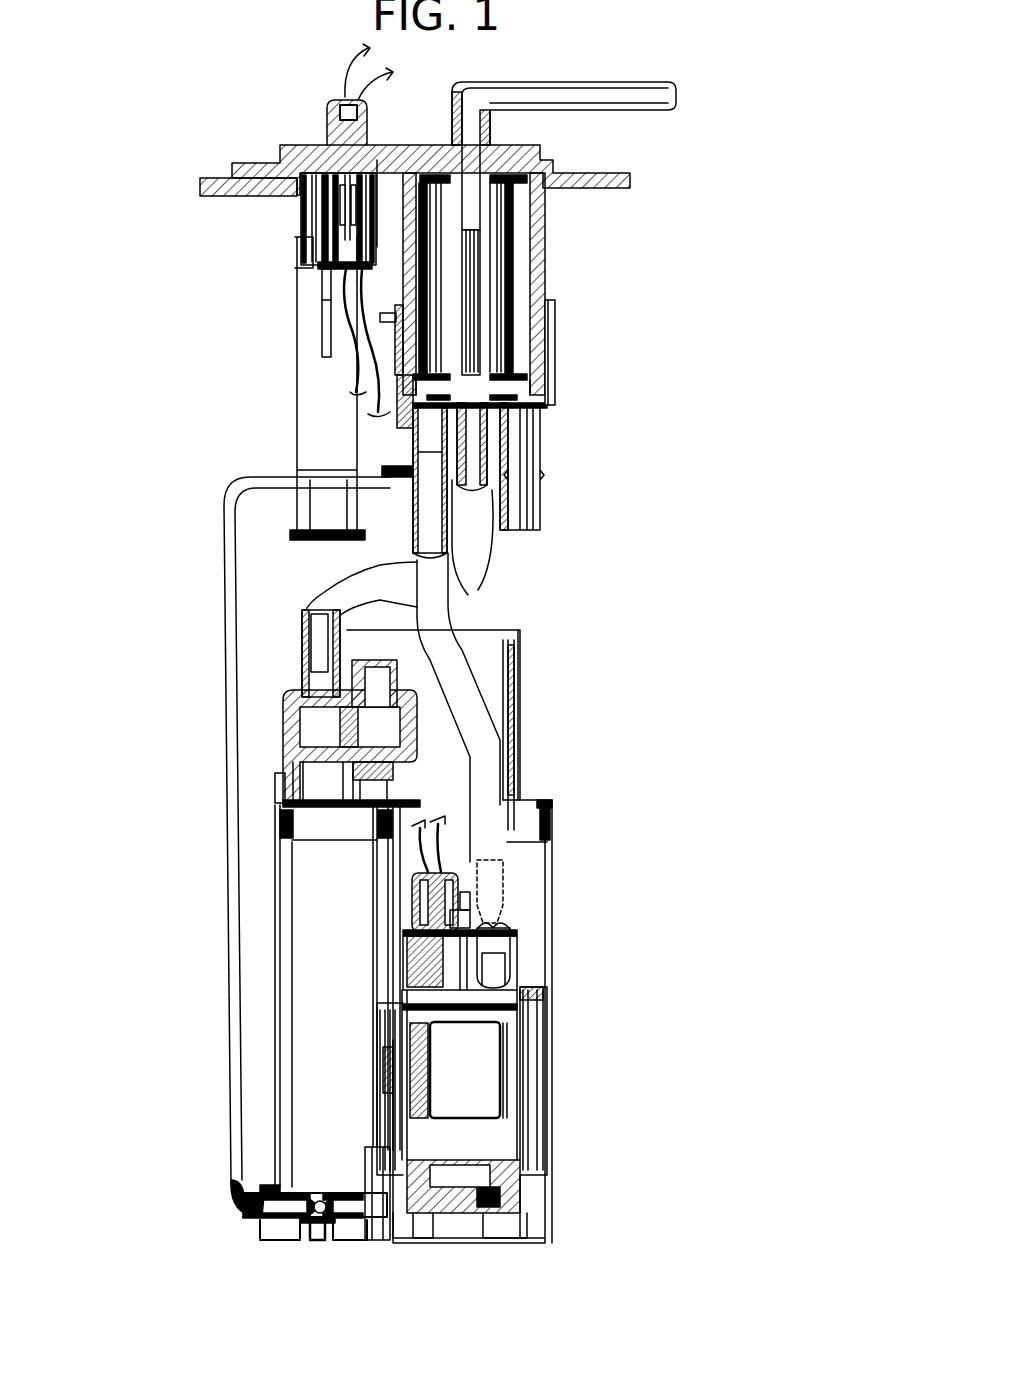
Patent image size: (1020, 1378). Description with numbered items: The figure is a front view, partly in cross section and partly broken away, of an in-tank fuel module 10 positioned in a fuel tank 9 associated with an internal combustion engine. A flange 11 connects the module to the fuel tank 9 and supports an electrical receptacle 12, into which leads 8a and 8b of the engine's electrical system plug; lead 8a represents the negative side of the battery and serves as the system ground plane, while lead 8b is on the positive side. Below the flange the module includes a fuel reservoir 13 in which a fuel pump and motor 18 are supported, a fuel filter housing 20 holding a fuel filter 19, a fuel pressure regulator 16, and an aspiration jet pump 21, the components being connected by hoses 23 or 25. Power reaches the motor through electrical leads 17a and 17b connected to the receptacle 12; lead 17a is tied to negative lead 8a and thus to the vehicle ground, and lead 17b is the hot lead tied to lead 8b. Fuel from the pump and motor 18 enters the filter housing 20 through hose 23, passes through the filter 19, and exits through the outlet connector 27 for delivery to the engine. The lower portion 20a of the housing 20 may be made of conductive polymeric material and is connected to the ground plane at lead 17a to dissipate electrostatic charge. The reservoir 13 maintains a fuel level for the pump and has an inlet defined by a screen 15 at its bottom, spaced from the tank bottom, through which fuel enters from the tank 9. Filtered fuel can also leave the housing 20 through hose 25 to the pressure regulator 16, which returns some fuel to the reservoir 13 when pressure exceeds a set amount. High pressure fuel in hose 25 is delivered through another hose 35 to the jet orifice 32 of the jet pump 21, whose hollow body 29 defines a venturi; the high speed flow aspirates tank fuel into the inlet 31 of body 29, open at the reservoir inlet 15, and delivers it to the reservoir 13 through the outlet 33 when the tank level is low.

The lead 8a is at (360, 50).
The lead 8b is at (380, 86).
The fuel tank 9 is at (205, 196).
The in-tank fuel module 10 is at (596, 347).
The flange 11 is at (562, 160).
The electrical receptacle 12 is at (315, 208).
The fuel reservoir 13 is at (340, 954).
The screen 15 is at (305, 1242).
The fuel pressure regulator 16 is at (422, 728).
The electrical lead 17a is at (353, 358).
The electrical lead 17b is at (373, 402).
The fuel pump and motor 18 is at (508, 947).
The fuel filter 19 is at (512, 258).
The fuel filter housing 20 is at (546, 228).
The lower portion of filter housing 20a is at (553, 300).
The aspiration jet pump 21 is at (215, 1197).
The hose 23 is at (476, 700).
The hose 25 is at (478, 558).
The outlet connector 27 is at (672, 105).
The body 29 is at (303, 1190).
The inlet 31 is at (305, 1243).
The jet orifice 32 is at (322, 1195).
The outlet 33 is at (380, 1147).
The hose 35 is at (236, 602).